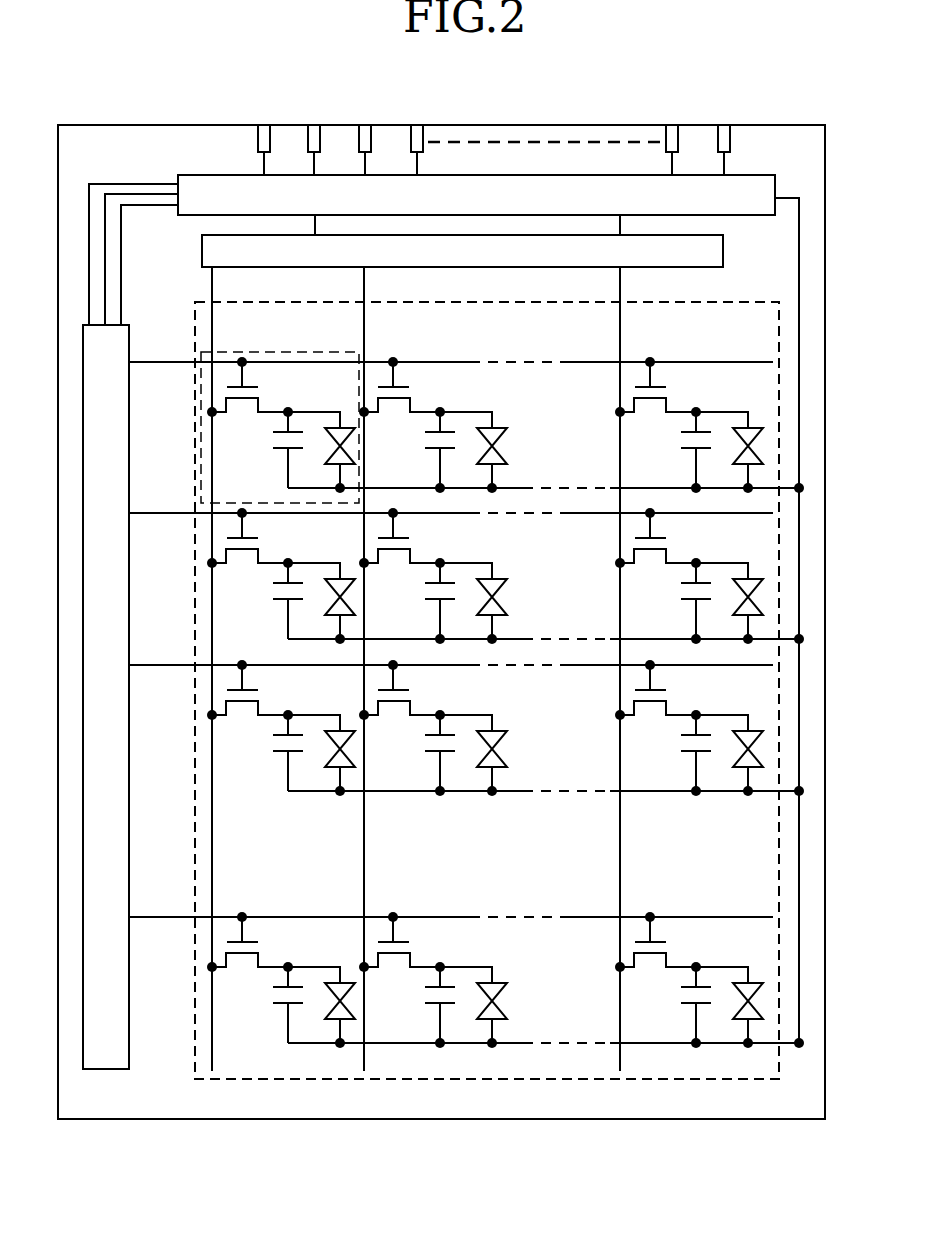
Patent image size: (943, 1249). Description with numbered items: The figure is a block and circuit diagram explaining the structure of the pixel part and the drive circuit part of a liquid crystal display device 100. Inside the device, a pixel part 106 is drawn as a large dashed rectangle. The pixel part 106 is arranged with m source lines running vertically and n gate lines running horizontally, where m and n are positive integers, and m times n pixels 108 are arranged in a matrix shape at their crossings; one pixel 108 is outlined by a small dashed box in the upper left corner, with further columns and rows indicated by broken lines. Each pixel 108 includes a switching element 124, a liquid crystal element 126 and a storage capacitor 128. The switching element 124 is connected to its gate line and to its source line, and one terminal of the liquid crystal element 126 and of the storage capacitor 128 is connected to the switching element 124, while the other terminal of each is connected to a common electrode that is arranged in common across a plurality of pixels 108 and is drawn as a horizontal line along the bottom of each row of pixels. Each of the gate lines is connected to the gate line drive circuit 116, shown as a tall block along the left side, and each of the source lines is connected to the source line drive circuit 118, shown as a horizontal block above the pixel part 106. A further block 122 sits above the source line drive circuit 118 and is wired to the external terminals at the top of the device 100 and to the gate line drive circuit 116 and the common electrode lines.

The liquid crystal display device 100 is at (573, 108).
The controller / data driver circuit 122 is at (497, 207).
The source line drive circuit 118 is at (497, 263).
The gate line drive circuit 116 is at (128, 709).
The pixel part 106 is at (277, 1080).
The pixel 108 is at (280, 407).
The switching element 124 is at (243, 407).
The liquid crystal element 126 is at (340, 425).
The storage capacitor 128 is at (278, 448).